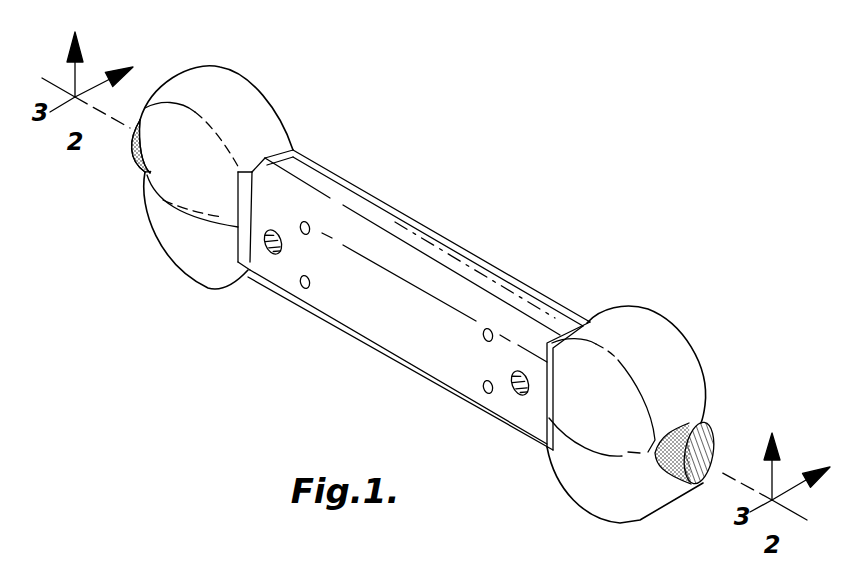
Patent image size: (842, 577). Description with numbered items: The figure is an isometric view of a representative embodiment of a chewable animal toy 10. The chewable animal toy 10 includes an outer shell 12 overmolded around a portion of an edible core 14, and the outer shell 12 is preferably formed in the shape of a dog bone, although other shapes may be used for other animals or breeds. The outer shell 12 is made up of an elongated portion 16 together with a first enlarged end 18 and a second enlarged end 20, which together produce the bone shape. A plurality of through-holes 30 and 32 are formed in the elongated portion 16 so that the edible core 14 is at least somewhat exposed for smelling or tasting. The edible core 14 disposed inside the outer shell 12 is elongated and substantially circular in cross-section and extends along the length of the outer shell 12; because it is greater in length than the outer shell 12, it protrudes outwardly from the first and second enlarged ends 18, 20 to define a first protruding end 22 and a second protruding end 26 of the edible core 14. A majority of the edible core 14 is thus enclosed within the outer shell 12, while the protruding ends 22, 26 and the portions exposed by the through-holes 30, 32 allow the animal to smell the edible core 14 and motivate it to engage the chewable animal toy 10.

The chewable animal toy 10 is at (506, 163).
The outer shell 12 is at (239, 293).
The edible core 14 is at (125, 173).
The elongated portion 16 is at (483, 272).
The first enlarged end 18 is at (258, 100).
The second enlarged end 20 is at (683, 355).
The first protruding end 22 is at (143, 118).
The second protruding end 26 is at (708, 480).
The through-hole 30 is at (272, 256).
The through-hole 32 is at (306, 222).